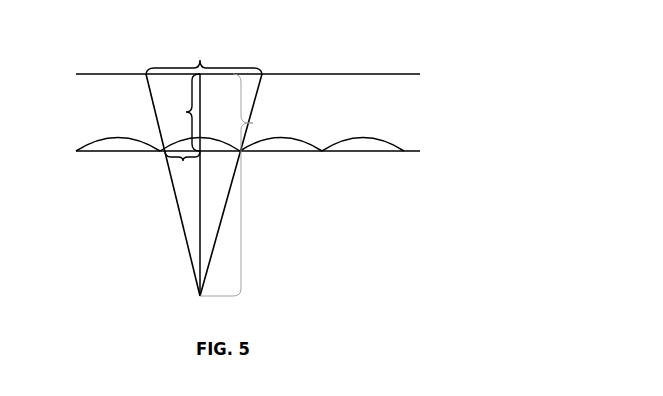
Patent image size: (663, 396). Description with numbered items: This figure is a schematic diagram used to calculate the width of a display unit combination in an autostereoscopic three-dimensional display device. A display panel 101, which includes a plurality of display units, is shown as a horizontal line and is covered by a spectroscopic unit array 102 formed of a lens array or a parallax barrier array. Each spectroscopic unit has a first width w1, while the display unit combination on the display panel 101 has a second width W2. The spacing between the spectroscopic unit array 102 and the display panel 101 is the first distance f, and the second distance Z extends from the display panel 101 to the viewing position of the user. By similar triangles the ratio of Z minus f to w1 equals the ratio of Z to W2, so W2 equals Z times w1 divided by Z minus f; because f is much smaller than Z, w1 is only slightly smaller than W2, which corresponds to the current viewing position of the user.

The display panel 101 is at (318, 76).
The spectroscopic unit array 102 is at (324, 152).
The second width W2 is at (204, 59).
The first distance f is at (187, 112).
The first width w1 is at (182, 163).
The second distance Z is at (249, 185).